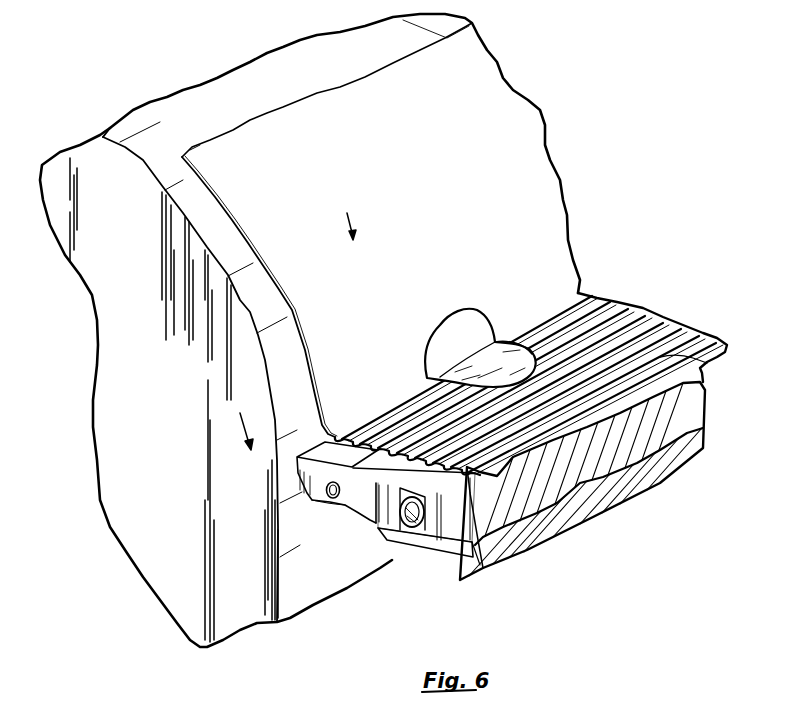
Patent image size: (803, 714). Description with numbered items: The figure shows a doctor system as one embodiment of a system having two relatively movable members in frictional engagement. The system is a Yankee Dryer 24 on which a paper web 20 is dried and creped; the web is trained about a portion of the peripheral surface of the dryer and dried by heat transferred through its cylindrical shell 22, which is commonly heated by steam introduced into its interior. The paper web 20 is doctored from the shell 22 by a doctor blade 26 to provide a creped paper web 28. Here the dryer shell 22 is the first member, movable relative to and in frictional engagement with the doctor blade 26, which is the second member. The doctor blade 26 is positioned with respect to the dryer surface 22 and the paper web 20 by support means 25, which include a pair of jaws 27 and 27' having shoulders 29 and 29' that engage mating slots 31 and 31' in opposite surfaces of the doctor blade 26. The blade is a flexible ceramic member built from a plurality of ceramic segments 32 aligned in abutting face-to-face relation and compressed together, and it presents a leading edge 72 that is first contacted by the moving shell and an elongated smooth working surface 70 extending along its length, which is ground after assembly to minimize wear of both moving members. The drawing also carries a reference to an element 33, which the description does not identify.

The paper web 20 is at (260, 135).
The cylindrical shell 22 is at (147, 147).
The Yankee Dryer 24 is at (110, 126).
The support means 25 is at (548, 548).
The doctor blade 26 is at (390, 530).
The jaw 27 is at (418, 561).
The jaw 27' is at (459, 566).
The creped paper web 28 is at (708, 360).
The shoulder 29 is at (350, 519).
The shoulder 29' is at (461, 507).
The slot 31 is at (321, 519).
The slot 31' is at (353, 494).
The ceramic segment 32 is at (310, 473).
The bore 33 is at (413, 528).
The working surface 70 is at (490, 365).
The leading edge 72 is at (467, 362).